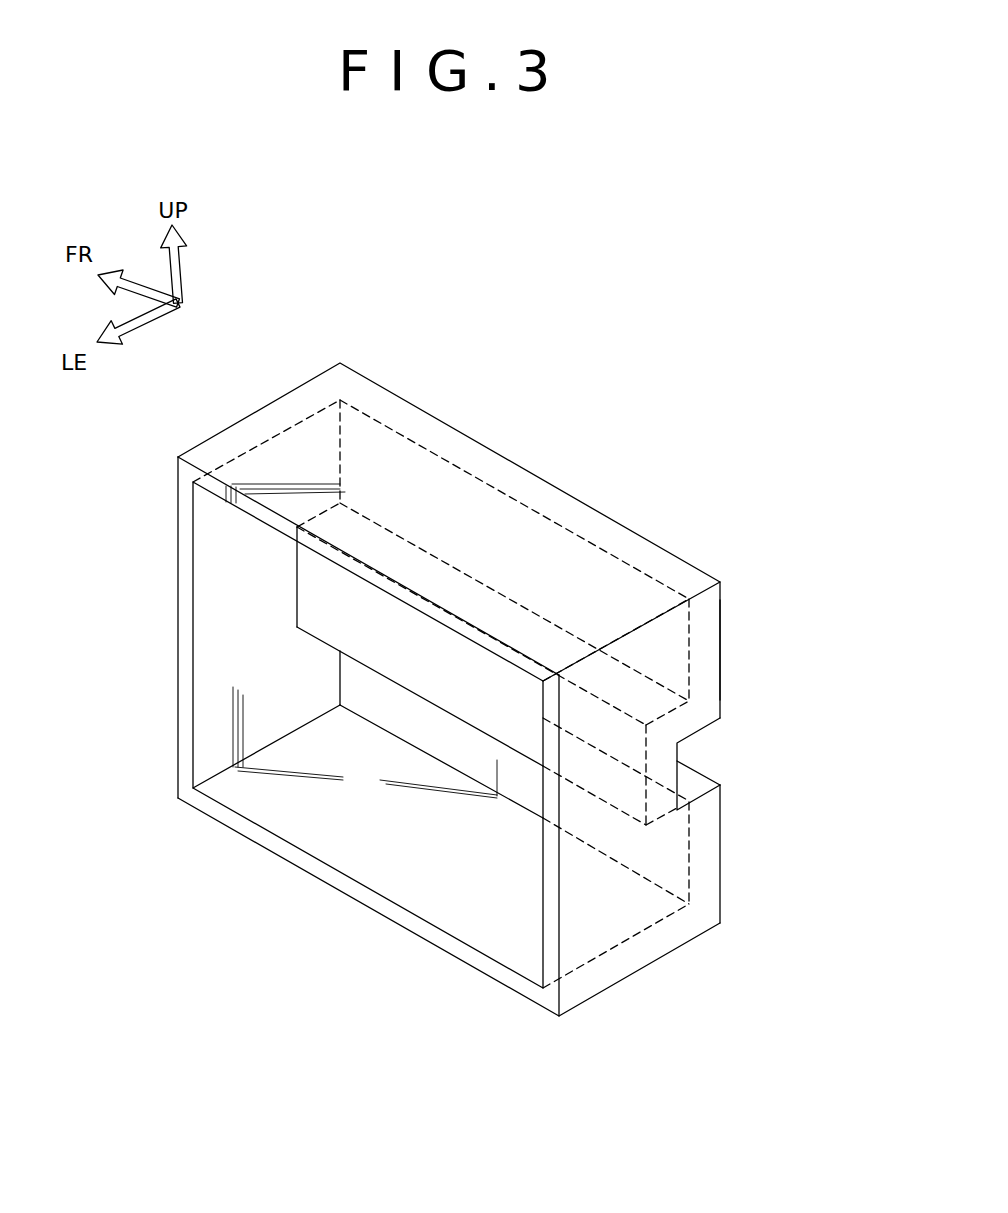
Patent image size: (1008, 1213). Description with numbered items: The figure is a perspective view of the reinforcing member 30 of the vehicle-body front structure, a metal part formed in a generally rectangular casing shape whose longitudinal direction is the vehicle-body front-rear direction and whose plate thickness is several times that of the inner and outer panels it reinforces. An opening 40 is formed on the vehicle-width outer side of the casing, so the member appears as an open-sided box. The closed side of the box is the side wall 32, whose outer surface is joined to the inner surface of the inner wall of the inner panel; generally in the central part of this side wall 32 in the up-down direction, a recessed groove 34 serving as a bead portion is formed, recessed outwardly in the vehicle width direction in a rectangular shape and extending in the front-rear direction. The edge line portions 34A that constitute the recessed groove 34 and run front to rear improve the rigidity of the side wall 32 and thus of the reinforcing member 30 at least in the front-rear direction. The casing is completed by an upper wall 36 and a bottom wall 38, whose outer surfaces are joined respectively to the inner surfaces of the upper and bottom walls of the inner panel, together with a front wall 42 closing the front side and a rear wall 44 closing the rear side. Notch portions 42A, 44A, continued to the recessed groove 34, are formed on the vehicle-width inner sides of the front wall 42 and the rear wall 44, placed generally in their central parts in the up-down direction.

The reinforcing member 30 is at (629, 458).
The side wall 32 is at (722, 650).
The recessed groove 34 is at (692, 749).
The edge line portions 34A is at (716, 778).
The upper wall 36 is at (405, 452).
The bottom wall 38 is at (368, 873).
The opening 40 is at (204, 700).
The front wall 42 is at (207, 620).
The notch portion 42A is at (297, 598).
The rear wall 44 is at (640, 918).
The notch portion 44A is at (678, 790).